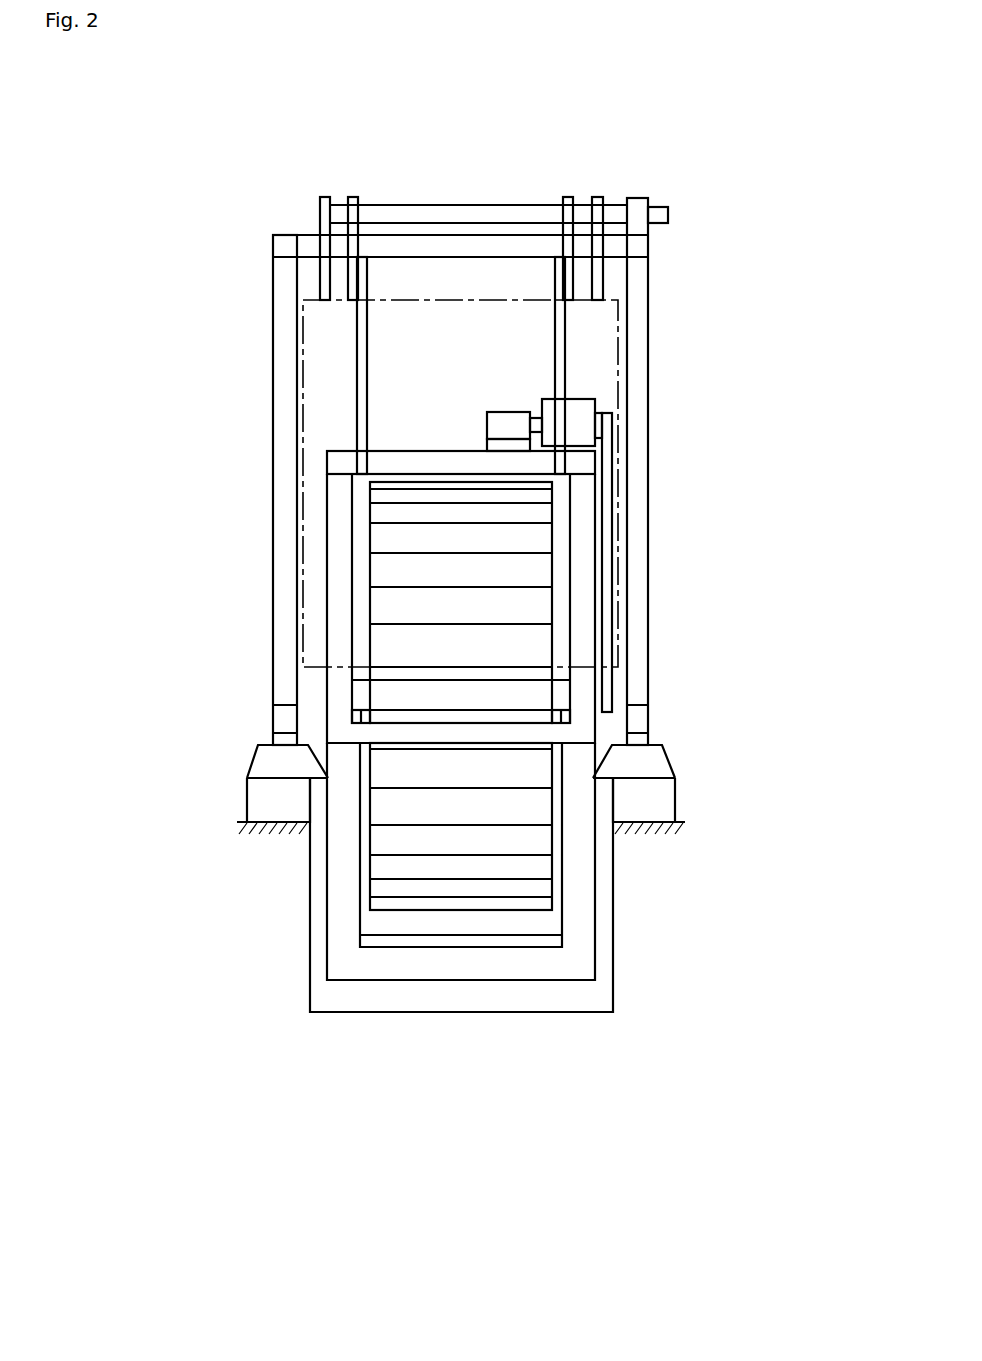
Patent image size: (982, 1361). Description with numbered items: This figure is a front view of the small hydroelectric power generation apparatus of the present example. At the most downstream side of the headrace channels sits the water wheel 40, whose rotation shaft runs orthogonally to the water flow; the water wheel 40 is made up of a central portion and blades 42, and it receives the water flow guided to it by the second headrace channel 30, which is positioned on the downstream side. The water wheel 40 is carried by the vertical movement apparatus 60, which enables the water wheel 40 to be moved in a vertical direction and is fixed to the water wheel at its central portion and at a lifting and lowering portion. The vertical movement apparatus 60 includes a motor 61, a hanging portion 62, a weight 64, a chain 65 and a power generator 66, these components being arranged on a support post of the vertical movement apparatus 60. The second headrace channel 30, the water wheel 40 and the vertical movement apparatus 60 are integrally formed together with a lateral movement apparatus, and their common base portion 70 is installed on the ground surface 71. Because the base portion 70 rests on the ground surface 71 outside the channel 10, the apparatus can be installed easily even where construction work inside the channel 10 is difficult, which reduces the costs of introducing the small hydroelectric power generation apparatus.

The channel 10 is at (462, 1012).
The second headrace channel 30 is at (507, 933).
The water wheel 40 is at (370, 845).
The blades 42 is at (415, 555).
The vertical movement apparatus 60 is at (461, 162).
The motor 61 is at (660, 205).
The hanging portion 62 is at (567, 333).
The weight 64 is at (410, 300).
The chain 65 is at (612, 485).
The power generator 66 is at (487, 427).
The base portion 70 is at (268, 828).
The ground surface 71 is at (275, 833).